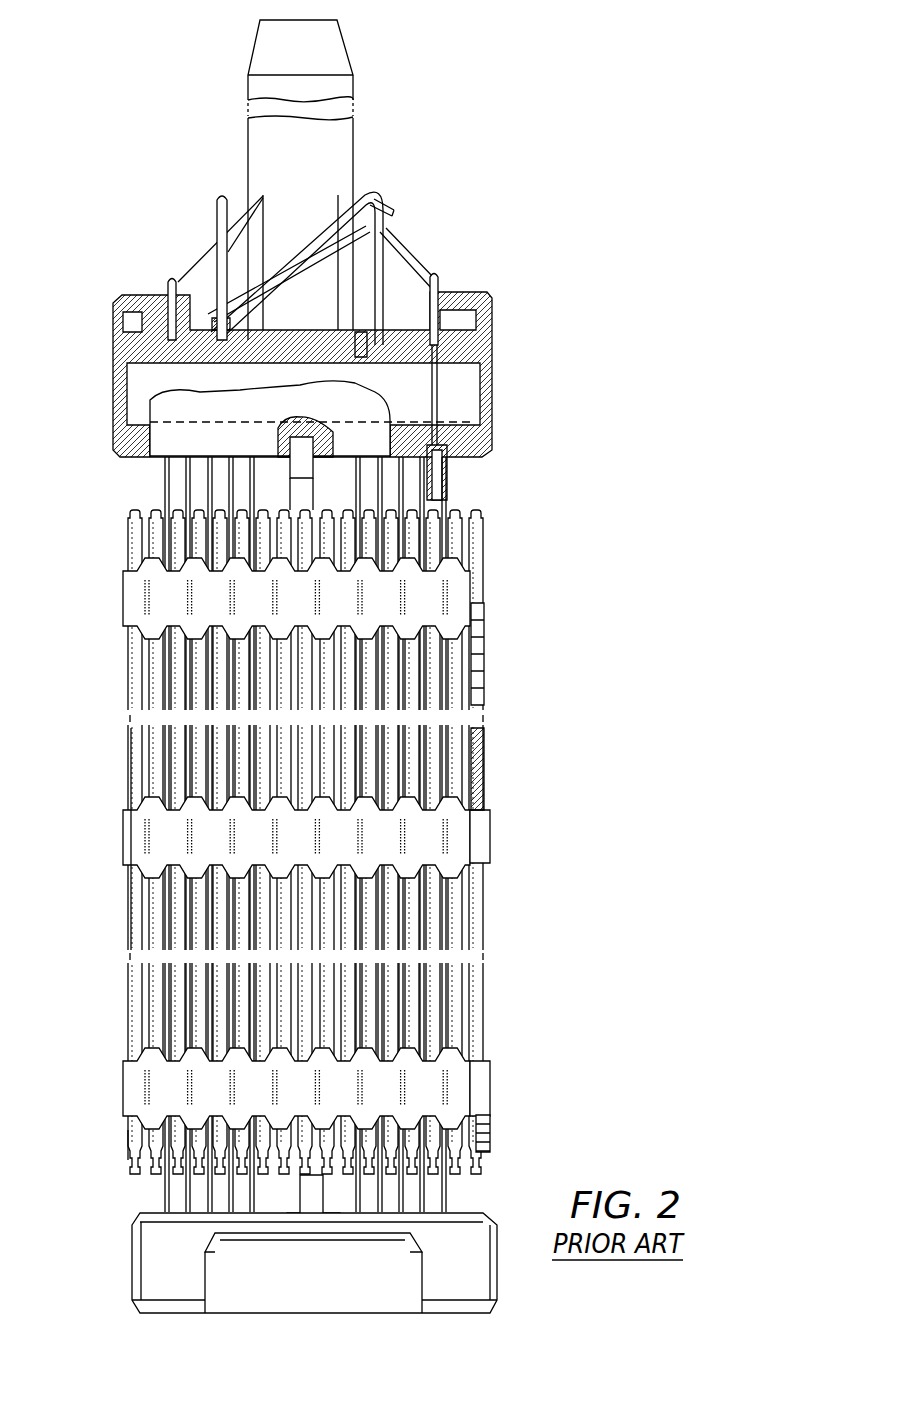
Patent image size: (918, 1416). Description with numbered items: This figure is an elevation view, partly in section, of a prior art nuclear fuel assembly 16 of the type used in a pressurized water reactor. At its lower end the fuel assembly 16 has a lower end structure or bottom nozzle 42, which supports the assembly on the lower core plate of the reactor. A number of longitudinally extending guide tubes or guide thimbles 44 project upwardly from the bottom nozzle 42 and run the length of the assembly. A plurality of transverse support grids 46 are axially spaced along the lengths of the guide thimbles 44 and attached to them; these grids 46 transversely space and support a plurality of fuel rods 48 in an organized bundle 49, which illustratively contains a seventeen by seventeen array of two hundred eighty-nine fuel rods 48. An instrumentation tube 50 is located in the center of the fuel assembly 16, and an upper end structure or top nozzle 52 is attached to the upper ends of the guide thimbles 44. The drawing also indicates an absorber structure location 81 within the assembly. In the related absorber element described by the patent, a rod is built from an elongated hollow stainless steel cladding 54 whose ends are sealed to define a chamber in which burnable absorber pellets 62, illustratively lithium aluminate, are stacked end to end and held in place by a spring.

The fuel assembly 16 is at (520, 215).
The bottom nozzle 42 is at (132, 1270).
The guide thimbles 44 is at (160, 493).
The support grids 46 is at (123, 600).
The fuel rods 48 is at (485, 660).
The bundle 49 is at (200, 678).
The instrumentation tube 50 is at (311, 1256).
The top nozzle 52 is at (492, 378).
The cladding 54 is at (492, 780).
The burnable absorber pellets 62 is at (490, 1150).
The absorber structure location 81 is at (130, 1142).